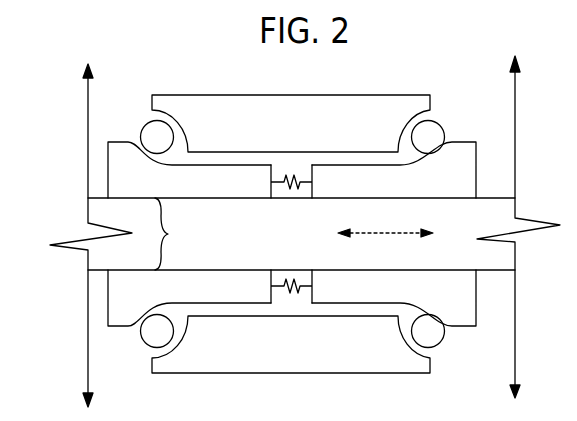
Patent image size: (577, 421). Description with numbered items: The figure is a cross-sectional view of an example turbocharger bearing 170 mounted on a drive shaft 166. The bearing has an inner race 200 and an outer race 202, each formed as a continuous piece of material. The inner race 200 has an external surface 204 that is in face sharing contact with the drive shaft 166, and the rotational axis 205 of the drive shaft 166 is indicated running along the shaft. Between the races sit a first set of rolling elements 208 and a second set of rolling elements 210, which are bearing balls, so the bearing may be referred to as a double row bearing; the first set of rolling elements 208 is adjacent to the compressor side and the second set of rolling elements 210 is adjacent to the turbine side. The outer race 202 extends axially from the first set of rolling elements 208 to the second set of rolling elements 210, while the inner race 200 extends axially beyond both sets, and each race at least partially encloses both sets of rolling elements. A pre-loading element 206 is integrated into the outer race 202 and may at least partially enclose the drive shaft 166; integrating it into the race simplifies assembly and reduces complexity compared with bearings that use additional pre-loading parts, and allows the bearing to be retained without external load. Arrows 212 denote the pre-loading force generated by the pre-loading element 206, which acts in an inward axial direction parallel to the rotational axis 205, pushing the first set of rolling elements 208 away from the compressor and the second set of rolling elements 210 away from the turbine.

The turbocharger bearing 170 is at (297, 73).
The drive shaft 166 is at (306, 244).
The inner race 200 is at (123, 152).
The outer race 202 is at (240, 112).
The external surface 204 is at (181, 234).
The rotational axis 205 is at (395, 231).
The pre-loading element 206 is at (276, 176).
The first set of rolling elements 208 is at (150, 129).
The second set of rolling elements 210 is at (436, 132).
The arrows 212 is at (248, 181).